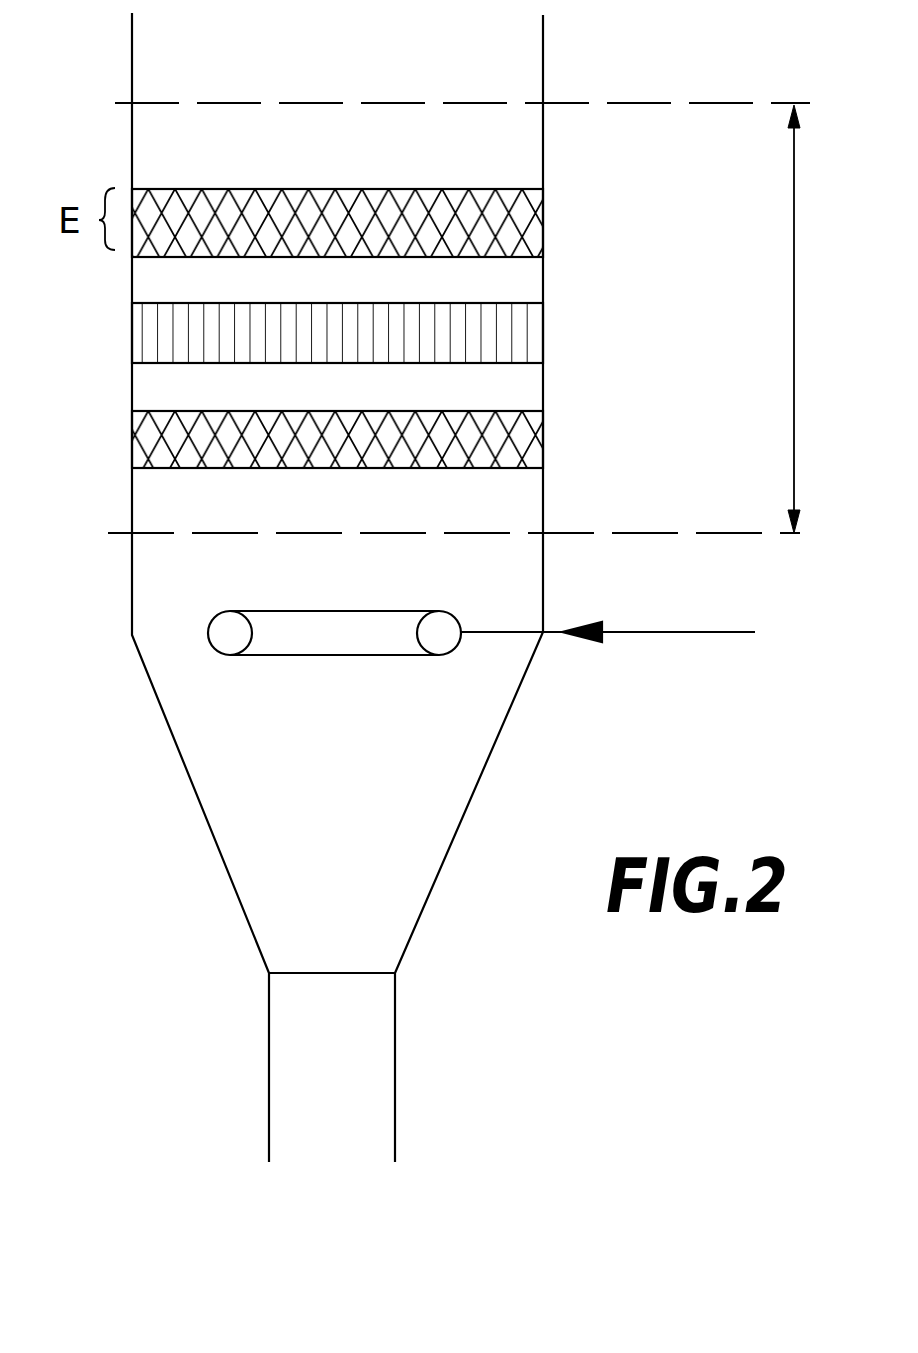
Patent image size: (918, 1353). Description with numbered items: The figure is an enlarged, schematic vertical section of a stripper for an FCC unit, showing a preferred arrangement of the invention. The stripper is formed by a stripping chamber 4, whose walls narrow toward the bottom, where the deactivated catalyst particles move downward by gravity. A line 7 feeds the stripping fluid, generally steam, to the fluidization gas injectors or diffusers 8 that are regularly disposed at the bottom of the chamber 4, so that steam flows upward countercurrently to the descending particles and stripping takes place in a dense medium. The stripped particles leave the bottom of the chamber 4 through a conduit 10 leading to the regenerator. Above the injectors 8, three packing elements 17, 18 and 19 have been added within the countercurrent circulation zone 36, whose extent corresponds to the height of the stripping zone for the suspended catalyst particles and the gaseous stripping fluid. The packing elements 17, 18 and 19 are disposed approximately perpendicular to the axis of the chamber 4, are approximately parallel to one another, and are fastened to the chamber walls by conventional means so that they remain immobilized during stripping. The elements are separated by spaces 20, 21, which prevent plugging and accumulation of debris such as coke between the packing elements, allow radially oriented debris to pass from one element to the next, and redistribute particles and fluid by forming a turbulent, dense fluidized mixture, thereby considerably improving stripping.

The chamber 4 is at (130, 146).
The line 7 is at (652, 634).
The fluidization gas injectors or diffusers 8 is at (440, 642).
The conduit 10 is at (363, 1058).
The packing element 17 is at (528, 237).
The packing element 18 is at (520, 333).
The packing element 19 is at (518, 446).
The space 20 is at (158, 378).
The space 21 is at (145, 278).
The countercurrent circulation zone 36 is at (796, 356).